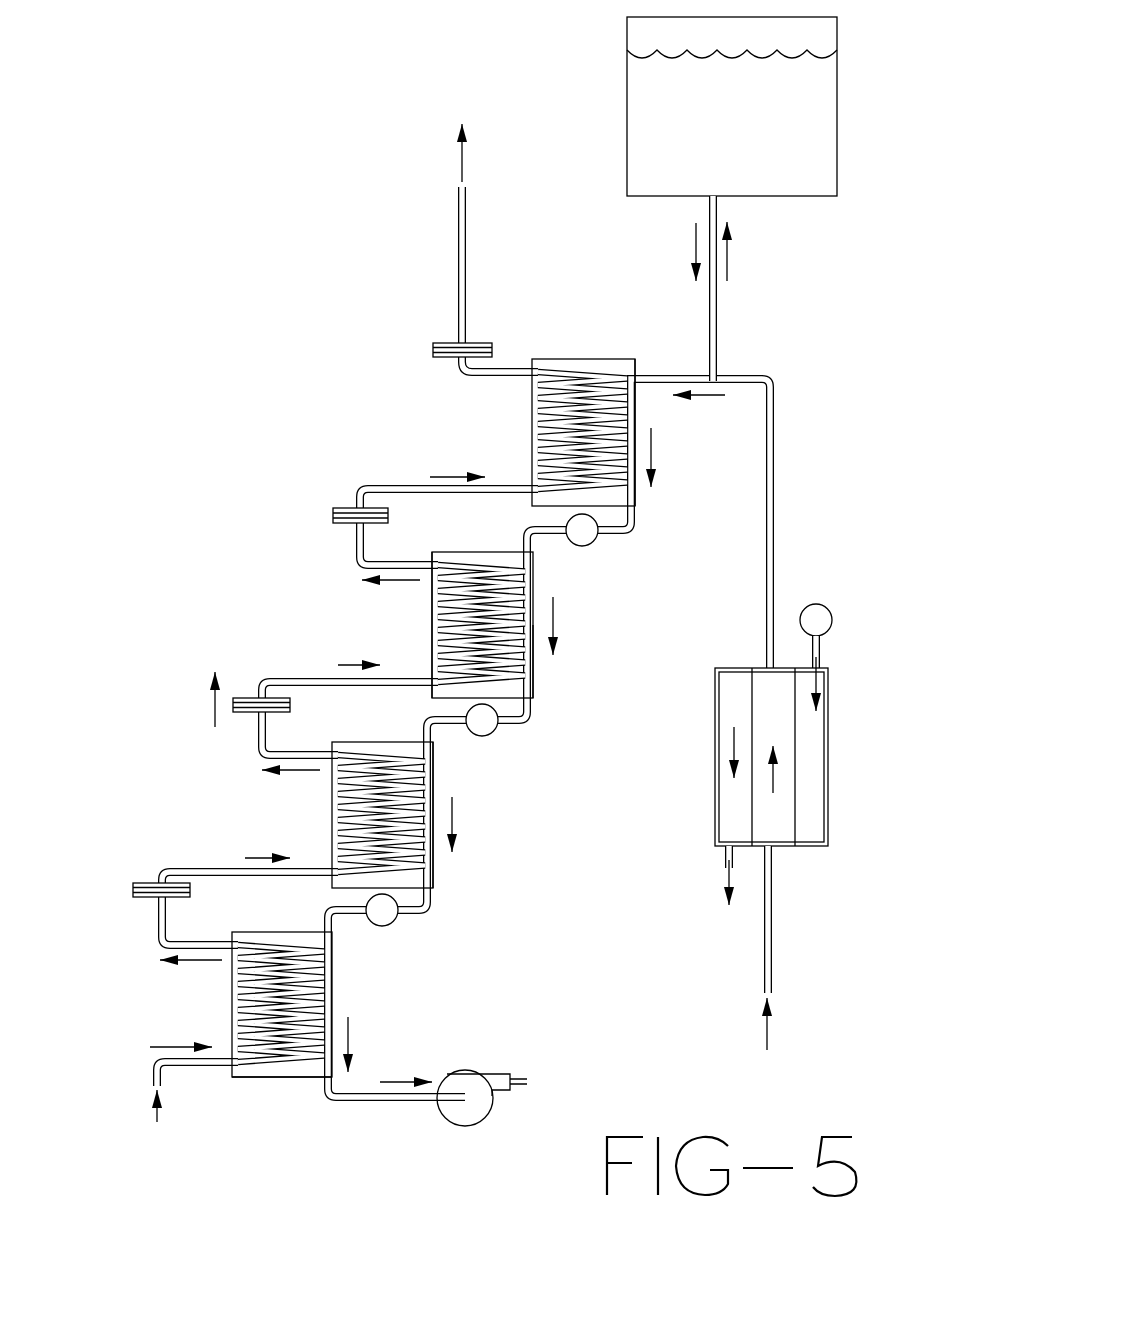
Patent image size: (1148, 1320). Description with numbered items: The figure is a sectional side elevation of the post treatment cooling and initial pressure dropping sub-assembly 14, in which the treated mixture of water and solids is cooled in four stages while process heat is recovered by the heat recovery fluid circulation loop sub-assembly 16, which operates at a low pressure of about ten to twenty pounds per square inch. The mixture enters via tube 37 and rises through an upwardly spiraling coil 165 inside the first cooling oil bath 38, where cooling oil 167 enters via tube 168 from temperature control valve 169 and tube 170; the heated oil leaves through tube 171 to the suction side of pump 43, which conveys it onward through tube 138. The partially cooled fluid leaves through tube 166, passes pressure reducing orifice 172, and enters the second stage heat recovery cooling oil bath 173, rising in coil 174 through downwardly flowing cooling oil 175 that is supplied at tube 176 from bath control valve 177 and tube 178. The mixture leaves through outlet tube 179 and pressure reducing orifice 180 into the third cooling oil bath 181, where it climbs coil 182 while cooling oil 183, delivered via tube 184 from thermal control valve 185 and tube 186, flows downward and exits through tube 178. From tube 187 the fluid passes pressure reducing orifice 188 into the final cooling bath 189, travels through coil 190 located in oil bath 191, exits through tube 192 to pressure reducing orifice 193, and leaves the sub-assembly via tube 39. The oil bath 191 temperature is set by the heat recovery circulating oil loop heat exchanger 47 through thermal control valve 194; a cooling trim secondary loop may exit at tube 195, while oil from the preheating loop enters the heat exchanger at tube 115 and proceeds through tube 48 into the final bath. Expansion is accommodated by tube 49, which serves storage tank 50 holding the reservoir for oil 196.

The post treatment cooling and initial pressure dropping sub-assembly 14 is at (217, 388).
The heat recovery fluid circulation loop sub-assembly 16 is at (645, 793).
The tube 37 is at (155, 1065).
The cooling oil bath 38 is at (336, 994).
The tube 39 is at (456, 208).
The pump 43 is at (490, 1072).
The heat recovery circulating oil loop heat exchanger 47 is at (832, 758).
The tube 48 is at (768, 380).
The tube 49 is at (709, 302).
The storage tank 50 is at (838, 88).
The tube 115 is at (772, 958).
The tube 138 is at (523, 1084).
The upwardly spiraling coil 165 is at (263, 1067).
The tube 166 is at (160, 948).
The cooling oil 167 is at (297, 1068).
The tube 168 is at (329, 916).
The temperature control valve 169 is at (380, 928).
The tube 170 is at (428, 920).
The tube 171 is at (398, 1102).
The pressure reducing orifice 172 is at (140, 882).
The second stage heat recovery cooling oil bath 173 is at (336, 822).
The coil 174 is at (438, 798).
The cooling oil 175 is at (432, 882).
The tube 176 is at (428, 722).
The bath control valve 177 is at (493, 738).
The tube 178 is at (522, 724).
The outlet tube 179 is at (262, 742).
The pressure reducing orifice 180 is at (234, 700).
The third cooling oil bath 181 is at (434, 624).
The coil 182 is at (520, 588).
The cooling oil 183 is at (515, 690).
The tube 184 is at (527, 534).
The thermal control valve 185 is at (590, 546).
The tube 186 is at (627, 525).
The tube 187 is at (358, 556).
The pressure reducing orifice 188 is at (334, 510).
The final cooling bath 189 is at (535, 440).
The coil 190 is at (620, 416).
The oil bath 191 is at (615, 500).
The tube 192 is at (466, 374).
The pressure reducing orifice 193 is at (433, 346).
The thermal control valve 194 is at (810, 602).
The tube 195 is at (723, 870).
The reservoir for oil 196 is at (732, 102).